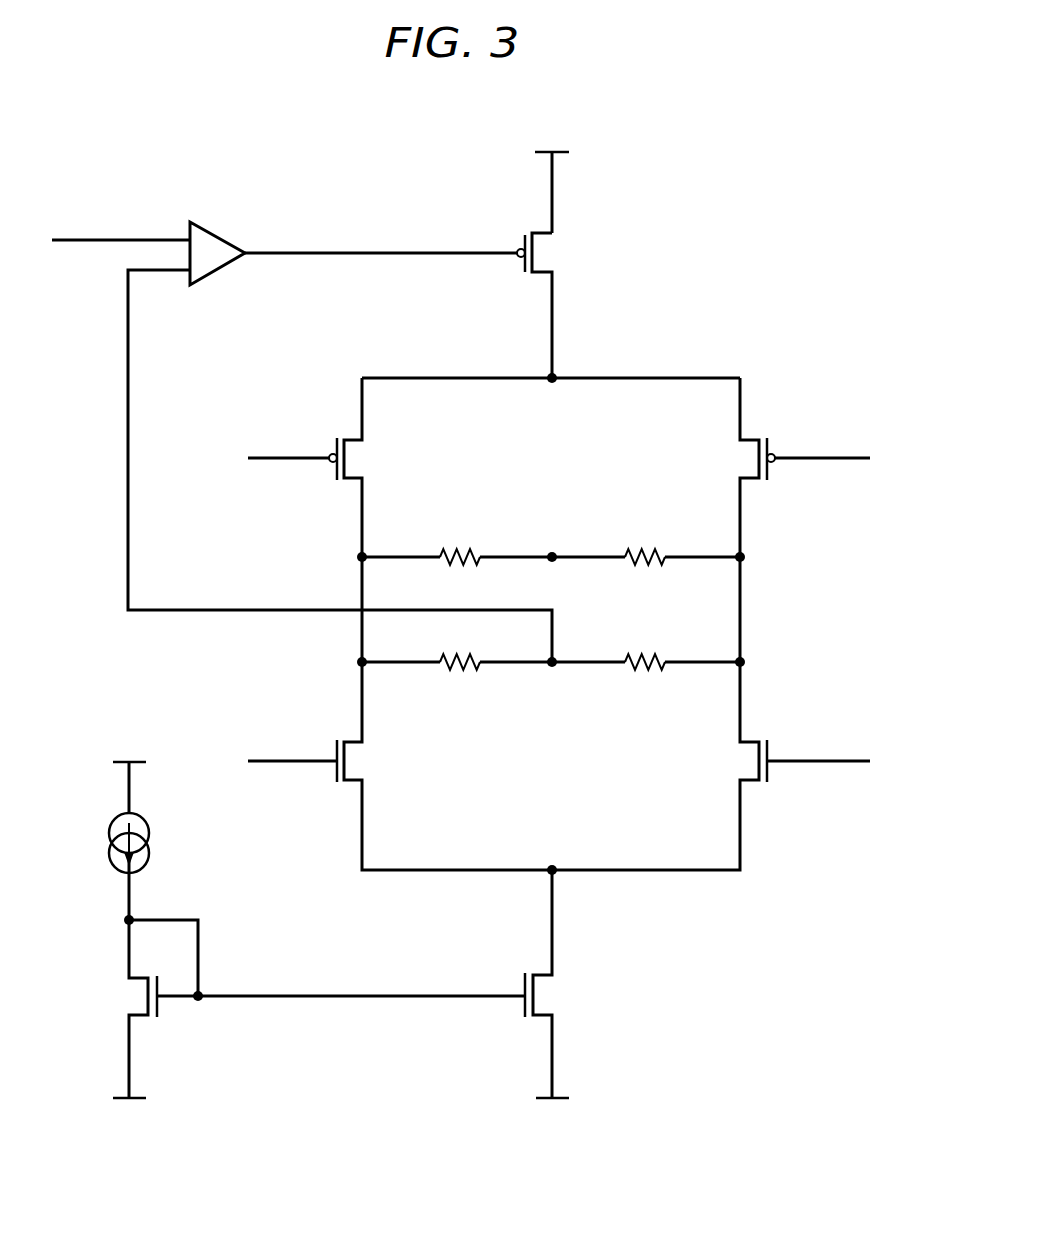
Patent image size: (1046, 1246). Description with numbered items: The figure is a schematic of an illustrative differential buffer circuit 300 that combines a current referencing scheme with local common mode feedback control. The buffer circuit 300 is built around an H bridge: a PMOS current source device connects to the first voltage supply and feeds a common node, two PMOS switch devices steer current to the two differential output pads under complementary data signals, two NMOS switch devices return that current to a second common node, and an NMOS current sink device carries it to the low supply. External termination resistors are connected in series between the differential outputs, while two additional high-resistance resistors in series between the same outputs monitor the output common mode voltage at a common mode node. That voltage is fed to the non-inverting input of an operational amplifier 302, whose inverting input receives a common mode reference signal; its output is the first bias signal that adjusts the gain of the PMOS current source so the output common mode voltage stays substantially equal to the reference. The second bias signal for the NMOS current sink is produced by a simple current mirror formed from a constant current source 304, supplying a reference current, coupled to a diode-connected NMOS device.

The differential buffer circuit 300 is at (726, 197).
The operational amplifier 302 is at (212, 228).
The constant current source 304 is at (105, 850).